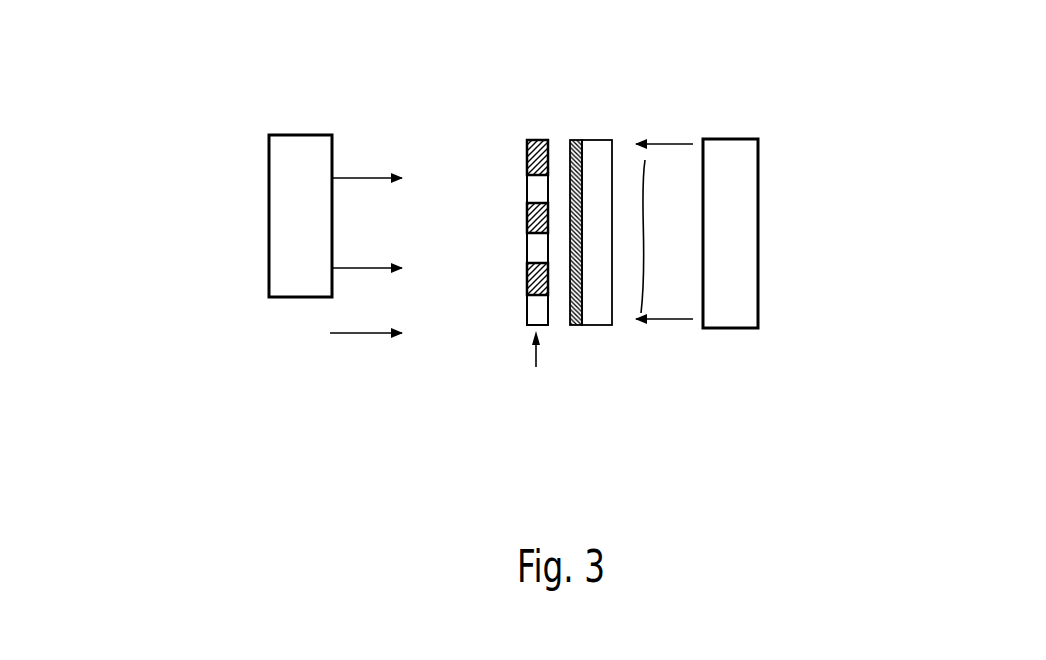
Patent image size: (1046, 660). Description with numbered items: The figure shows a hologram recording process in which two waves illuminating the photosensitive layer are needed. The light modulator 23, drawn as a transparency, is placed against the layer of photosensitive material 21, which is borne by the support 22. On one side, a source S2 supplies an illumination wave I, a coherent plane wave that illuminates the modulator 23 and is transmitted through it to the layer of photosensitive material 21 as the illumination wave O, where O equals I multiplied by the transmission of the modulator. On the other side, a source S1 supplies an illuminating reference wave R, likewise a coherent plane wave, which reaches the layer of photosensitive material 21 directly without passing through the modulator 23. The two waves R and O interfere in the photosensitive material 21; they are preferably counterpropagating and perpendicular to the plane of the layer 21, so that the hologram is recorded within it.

The source S2 is at (302, 150).
The source S1 is at (730, 232).
The layer of photosensitive material 21 is at (572, 327).
The support 22 is at (593, 305).
The light modulator 23 is at (524, 323).
The illumination wave I is at (251, 251).
The illuminating reference wave R is at (734, 195).
The illumination wave O is at (557, 174).